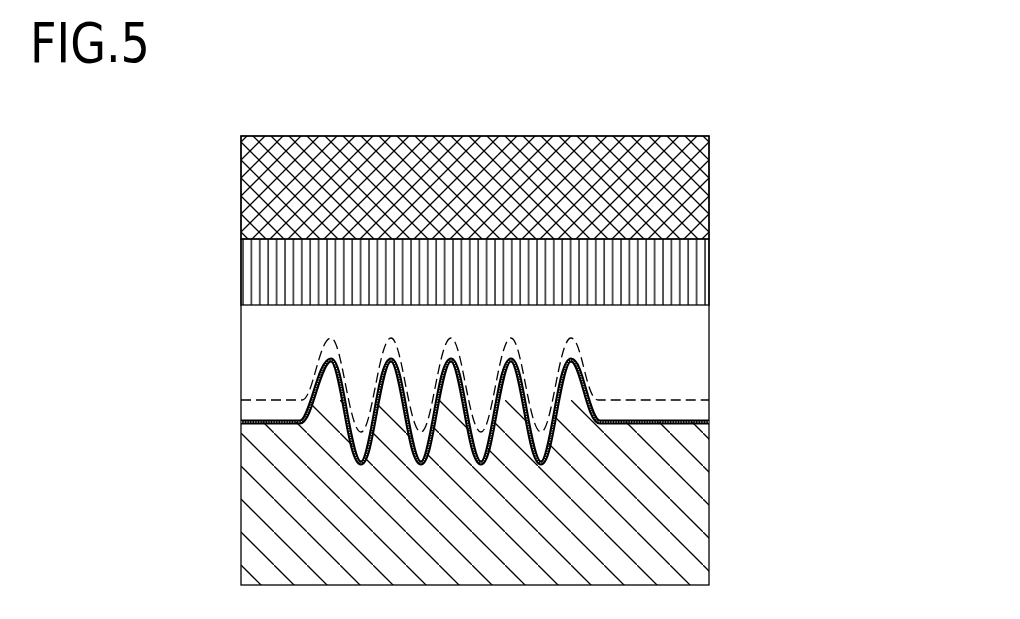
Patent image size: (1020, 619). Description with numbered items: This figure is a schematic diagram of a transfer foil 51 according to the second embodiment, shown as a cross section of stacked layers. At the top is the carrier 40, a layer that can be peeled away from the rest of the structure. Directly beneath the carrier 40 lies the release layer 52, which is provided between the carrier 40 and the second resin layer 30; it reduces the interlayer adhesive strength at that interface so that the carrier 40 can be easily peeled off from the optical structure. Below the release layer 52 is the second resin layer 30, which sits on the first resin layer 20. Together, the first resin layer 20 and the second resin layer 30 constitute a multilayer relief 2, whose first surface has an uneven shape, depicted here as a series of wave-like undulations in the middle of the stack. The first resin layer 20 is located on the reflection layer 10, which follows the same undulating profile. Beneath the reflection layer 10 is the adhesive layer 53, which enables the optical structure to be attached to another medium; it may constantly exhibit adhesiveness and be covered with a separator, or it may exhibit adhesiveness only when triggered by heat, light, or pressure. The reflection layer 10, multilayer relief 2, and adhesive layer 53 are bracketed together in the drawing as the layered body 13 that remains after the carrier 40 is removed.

The transfer foil 51 is at (723, 117).
The carrier 40 is at (682, 185).
The release layer 52 is at (683, 272).
The second resin layer 30 is at (683, 352).
The first resin layer 20 is at (690, 412).
The reflection layer 10 is at (710, 423).
The multilayer relief 2 is at (539, 385).
The laminated body 13 is at (567, 446).
The adhesive layer 53 is at (539, 492).